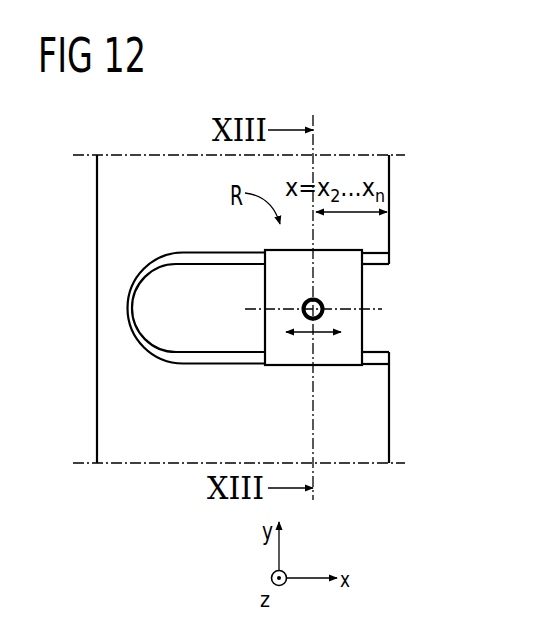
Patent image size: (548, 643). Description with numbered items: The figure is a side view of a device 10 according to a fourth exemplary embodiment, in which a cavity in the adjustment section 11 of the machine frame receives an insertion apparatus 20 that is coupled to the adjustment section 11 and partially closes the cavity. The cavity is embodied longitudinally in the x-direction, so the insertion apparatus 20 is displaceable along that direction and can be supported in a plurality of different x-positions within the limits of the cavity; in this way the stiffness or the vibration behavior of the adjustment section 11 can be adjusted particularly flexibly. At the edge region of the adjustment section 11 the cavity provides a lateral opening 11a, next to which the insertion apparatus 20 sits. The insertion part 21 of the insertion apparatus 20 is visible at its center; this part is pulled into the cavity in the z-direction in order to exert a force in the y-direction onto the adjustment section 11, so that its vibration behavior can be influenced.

The spring element / device 10 is at (372, 112).
The adjustment section 11 is at (195, 379).
The lateral opening 11a is at (405, 292).
The insertion apparatus 20 is at (368, 317).
The insertion part 21 is at (277, 289).